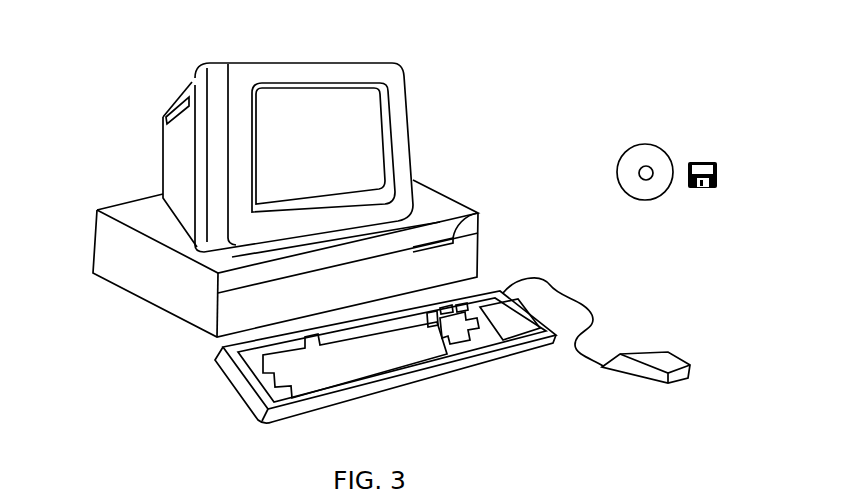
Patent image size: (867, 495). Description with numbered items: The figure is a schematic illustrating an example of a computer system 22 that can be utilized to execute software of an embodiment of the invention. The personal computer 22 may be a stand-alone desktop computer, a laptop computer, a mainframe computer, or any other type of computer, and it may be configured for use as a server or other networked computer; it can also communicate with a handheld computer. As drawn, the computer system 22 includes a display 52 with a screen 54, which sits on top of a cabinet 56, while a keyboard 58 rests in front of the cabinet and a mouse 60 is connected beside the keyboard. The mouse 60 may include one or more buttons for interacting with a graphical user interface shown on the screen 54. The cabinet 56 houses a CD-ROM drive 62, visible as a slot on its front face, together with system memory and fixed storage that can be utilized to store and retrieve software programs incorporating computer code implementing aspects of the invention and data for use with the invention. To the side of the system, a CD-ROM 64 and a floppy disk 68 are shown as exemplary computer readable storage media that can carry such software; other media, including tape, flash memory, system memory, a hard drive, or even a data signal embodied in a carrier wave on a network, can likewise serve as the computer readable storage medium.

The computer system 22 is at (588, 43).
The display 52 is at (412, 156).
The screen 54 is at (382, 100).
The cabinet 56 is at (180, 323).
The keyboard 58 is at (392, 389).
The mouse 60 is at (680, 362).
The CD-ROM drive 62 is at (478, 213).
The CD-ROM 64 is at (646, 138).
The floppy disk 68 is at (708, 153).